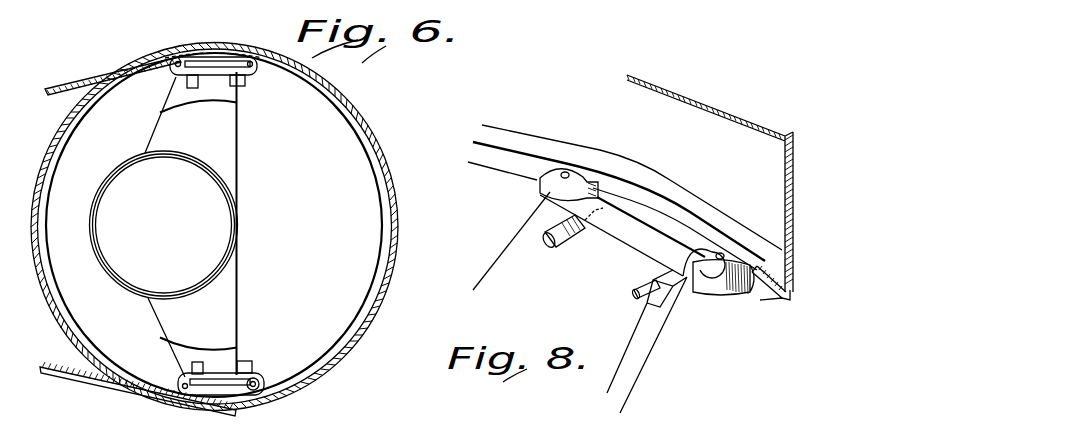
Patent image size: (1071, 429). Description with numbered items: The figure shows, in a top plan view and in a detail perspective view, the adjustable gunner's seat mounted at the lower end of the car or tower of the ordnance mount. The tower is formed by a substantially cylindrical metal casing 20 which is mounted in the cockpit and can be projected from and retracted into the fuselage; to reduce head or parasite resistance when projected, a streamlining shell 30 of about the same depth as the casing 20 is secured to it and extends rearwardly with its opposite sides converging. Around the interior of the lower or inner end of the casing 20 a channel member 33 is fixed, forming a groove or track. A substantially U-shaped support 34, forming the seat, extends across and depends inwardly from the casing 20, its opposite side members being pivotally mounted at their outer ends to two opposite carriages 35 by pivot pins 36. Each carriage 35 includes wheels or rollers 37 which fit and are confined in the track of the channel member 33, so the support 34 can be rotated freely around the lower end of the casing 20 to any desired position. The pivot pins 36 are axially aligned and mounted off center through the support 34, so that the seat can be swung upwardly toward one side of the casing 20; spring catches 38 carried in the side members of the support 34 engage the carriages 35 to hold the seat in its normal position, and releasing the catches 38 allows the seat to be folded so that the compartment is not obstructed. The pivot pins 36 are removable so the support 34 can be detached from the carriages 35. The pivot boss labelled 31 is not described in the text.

In FIG. 6, the casing 20 is at (383, 157).
In FIG. 8, the casing 20 is at (715, 122).
In FIG. 6, the shell 30 is at (72, 79).
In FIG. 8, the pivot boss 31 is at (540, 187).
In FIG. 6, the channel member 33 is at (347, 335).
In FIG. 8, the channel member 33 is at (766, 290).
In FIG. 6, the U-shaped support 34 is at (215, 291).
In FIG. 8, the U-shaped support 34 is at (627, 333).
In FIG. 6, the carriage 35 is at (218, 73).
In FIG. 8, the carriage 35 is at (652, 243).
In FIG. 6, the pivot pin 36 is at (193, 90).
In FIG. 8, the pivot pin 36 is at (550, 243).
In FIG. 6, the roller 37 is at (253, 374).
In FIG. 8, the roller 37 is at (727, 290).
In FIG. 6, the spring catch 38 is at (243, 367).
In FIG. 8, the spring catch 38 is at (637, 293).